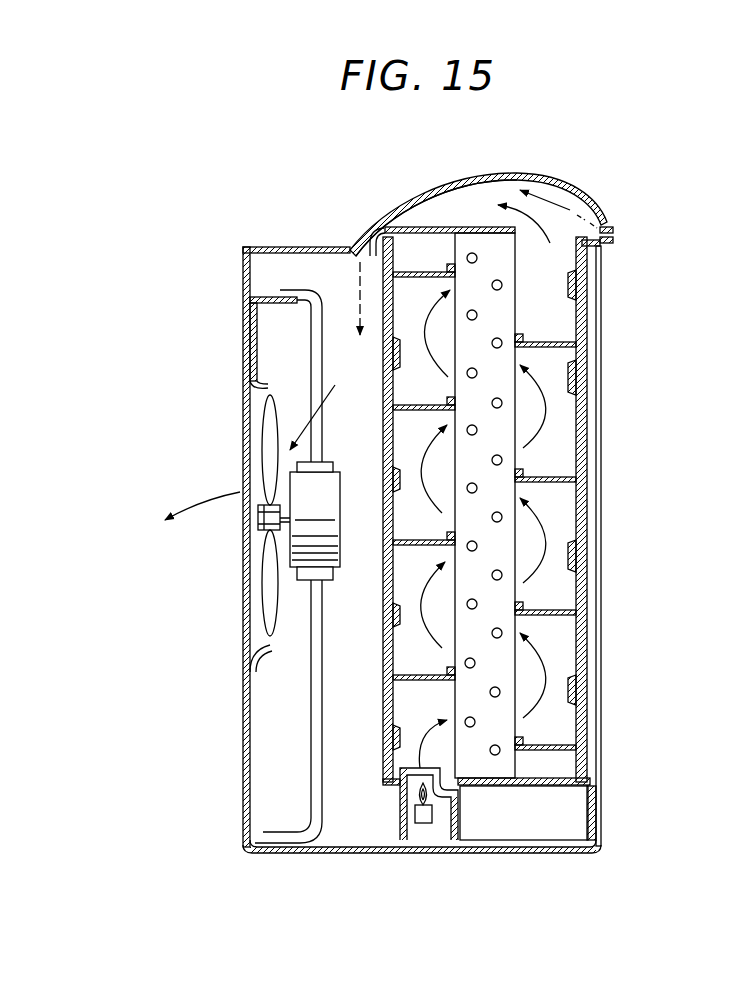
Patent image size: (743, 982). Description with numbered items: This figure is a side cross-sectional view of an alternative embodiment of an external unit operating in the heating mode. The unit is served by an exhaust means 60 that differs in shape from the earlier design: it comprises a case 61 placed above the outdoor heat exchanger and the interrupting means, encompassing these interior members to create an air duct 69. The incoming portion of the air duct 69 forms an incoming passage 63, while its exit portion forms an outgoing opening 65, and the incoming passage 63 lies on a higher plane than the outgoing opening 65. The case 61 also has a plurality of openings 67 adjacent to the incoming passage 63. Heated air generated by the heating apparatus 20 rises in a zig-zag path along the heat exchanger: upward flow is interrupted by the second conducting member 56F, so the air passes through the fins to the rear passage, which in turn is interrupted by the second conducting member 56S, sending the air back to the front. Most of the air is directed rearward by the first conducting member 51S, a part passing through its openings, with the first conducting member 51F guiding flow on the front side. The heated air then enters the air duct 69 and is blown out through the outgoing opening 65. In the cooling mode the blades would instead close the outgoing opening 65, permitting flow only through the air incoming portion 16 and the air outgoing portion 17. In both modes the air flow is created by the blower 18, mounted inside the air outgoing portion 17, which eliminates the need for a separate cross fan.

The air incoming portion 16 is at (600, 545).
The air outgoing portion 17 is at (258, 650).
The blower 18 is at (268, 580).
The heating apparatus 20 is at (415, 845).
The first conducting member 51S is at (410, 530).
The first conducting member 51F is at (567, 738).
The second conducting member 56S is at (550, 613).
The second conducting member 56F is at (427, 675).
The exhaust means 60 is at (575, 173).
The case 61 is at (387, 203).
The incoming passage 63 is at (560, 255).
The outgoing opening 65 is at (358, 240).
The openings 67 is at (610, 225).
The air duct 69 is at (472, 196).